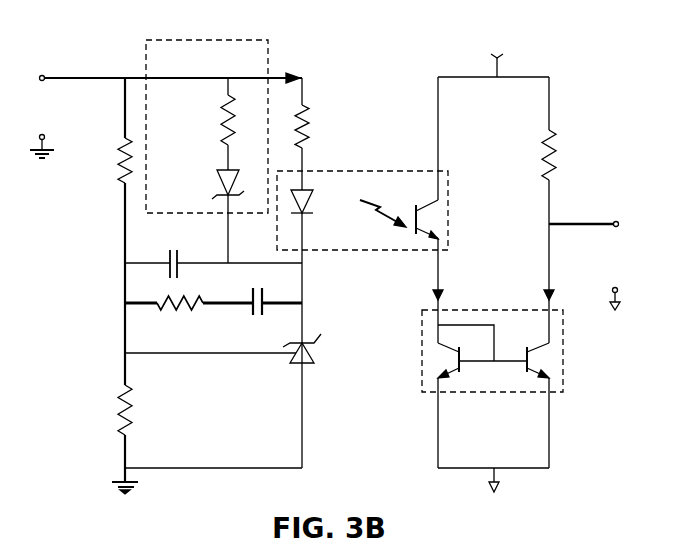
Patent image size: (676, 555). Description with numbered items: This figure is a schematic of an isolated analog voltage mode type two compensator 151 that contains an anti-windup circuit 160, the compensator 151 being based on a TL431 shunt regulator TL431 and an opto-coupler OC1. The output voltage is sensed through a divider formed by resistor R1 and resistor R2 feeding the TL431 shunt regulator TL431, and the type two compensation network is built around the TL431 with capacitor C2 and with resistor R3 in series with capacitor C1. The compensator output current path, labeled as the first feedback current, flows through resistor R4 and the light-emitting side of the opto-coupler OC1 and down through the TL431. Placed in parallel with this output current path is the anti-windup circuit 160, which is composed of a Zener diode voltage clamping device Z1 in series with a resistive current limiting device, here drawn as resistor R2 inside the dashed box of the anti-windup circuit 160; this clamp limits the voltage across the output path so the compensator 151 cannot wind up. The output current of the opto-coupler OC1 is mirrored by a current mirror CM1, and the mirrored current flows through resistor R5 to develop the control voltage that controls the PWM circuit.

The compensator 151 is at (391, 23).
The anti-windup circuit 160 is at (158, 118).
The resistor R1 is at (107, 160).
The series resistive current limiting device R2 is at (240, 120).
The resistor R3 is at (180, 321).
The resistor R4 is at (315, 126).
The resistor R5 is at (563, 155).
The capacitor C1 is at (255, 317).
The capacitor C2 is at (172, 253).
The Zener diode voltage clamping device Z1 is at (236, 184).
The opto-coupler OC1 is at (362, 226).
The current mirror CM1 is at (492, 367).
The TL431 shunt regulator TL431 is at (275, 367).